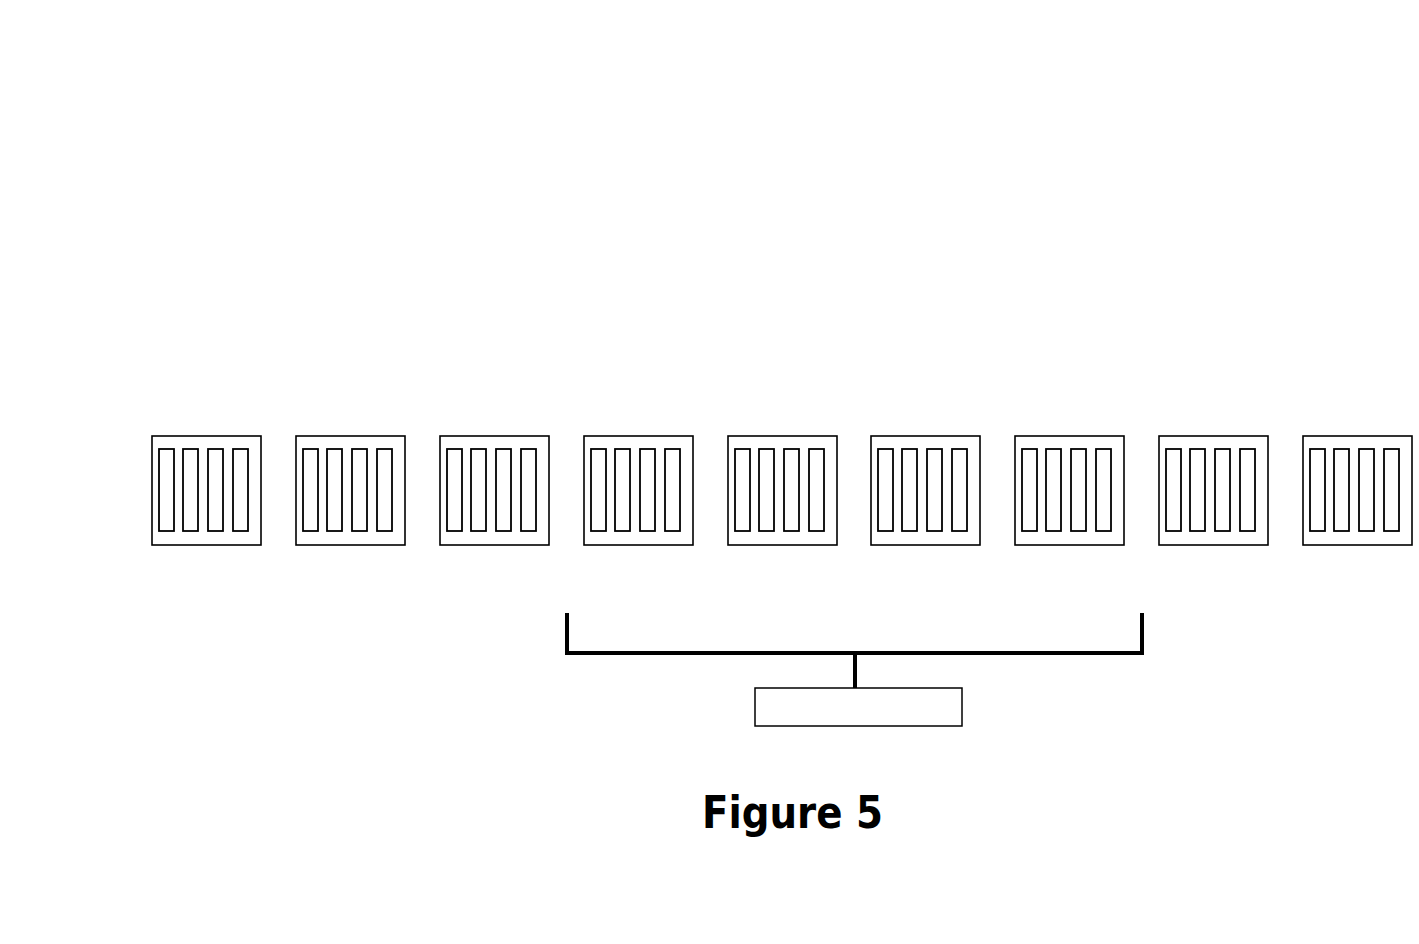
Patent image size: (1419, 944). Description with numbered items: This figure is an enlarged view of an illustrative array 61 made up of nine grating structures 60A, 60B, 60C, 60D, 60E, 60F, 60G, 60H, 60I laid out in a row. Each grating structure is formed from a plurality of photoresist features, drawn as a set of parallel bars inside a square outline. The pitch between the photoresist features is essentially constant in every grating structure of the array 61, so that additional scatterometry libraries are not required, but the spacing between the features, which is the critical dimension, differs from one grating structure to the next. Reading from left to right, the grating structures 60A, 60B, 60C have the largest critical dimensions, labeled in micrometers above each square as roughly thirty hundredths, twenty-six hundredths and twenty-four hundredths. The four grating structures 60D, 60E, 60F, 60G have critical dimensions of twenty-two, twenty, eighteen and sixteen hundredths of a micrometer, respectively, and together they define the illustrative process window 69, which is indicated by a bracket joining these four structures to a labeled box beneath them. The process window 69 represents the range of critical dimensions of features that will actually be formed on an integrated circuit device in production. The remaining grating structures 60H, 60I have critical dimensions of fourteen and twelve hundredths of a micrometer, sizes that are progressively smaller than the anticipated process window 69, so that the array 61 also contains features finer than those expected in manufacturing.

The grating structure 60A is at (198, 535).
The grating structure 60B is at (324, 535).
The grating structure 60C is at (468, 535).
The grating structure 60D is at (612, 535).
The grating structure 60E is at (756, 535).
The grating structure 60F is at (899, 535).
The grating structure 60G is at (1043, 535).
The grating structure 60H is at (1187, 535).
The grating structure 60I is at (1331, 535).
The array 61 is at (271, 128).
The process window 69 is at (953, 708).